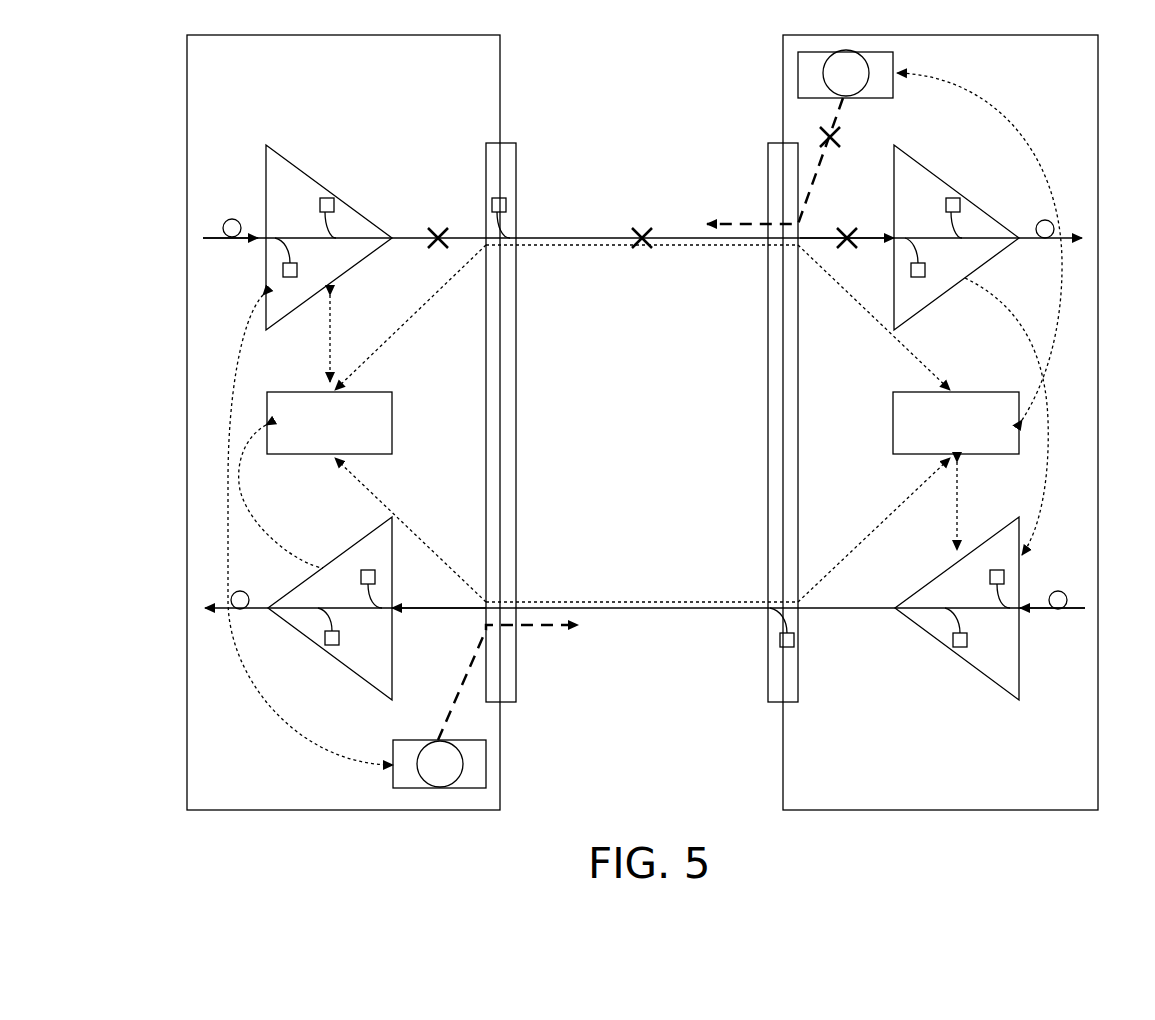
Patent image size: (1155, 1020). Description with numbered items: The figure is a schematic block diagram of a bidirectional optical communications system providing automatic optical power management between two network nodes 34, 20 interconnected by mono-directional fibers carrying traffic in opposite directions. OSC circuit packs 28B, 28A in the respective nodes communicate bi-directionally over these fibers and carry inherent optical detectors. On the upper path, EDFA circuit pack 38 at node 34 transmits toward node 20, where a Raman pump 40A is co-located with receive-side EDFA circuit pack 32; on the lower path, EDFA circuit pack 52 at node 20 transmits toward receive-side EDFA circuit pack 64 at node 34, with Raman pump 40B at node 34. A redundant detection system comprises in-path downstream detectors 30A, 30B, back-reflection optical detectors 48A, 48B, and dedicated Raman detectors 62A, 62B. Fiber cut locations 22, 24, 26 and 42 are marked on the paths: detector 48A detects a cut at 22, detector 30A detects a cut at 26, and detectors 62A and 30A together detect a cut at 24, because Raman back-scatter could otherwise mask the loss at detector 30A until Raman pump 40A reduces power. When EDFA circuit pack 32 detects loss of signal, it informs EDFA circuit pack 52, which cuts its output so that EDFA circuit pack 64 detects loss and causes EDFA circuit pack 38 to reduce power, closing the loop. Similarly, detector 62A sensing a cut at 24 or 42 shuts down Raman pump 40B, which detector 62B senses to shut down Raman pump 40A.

The network node 20 is at (1098, 192).
The network node 34 is at (187, 178).
The fiber cut location 22 is at (427, 220).
The fiber cut location 24 is at (640, 218).
The fiber cut location 26 is at (844, 218).
The fiber cut location 42 is at (814, 128).
The EDFA circuit pack 38 is at (295, 163).
The EDFA circuit pack 32 is at (980, 210).
The EDFA circuit pack 64 is at (302, 640).
The EDFA circuit pack 52 is at (967, 668).
The back-reflection optical detector 48A is at (330, 198).
The back-reflection optical detector 48B is at (953, 641).
The in-path downstream detector 30A is at (926, 271).
The in-path downstream detector 30B is at (361, 576).
The dedicated Raman detector 62A is at (506, 205).
The dedicated Raman detector 62B is at (780, 640).
The Raman pump 40A is at (798, 68).
The Raman pump 40B is at (486, 765).
The OSC circuit pack 28A is at (893, 423).
The OSC circuit pack 28B is at (393, 425).